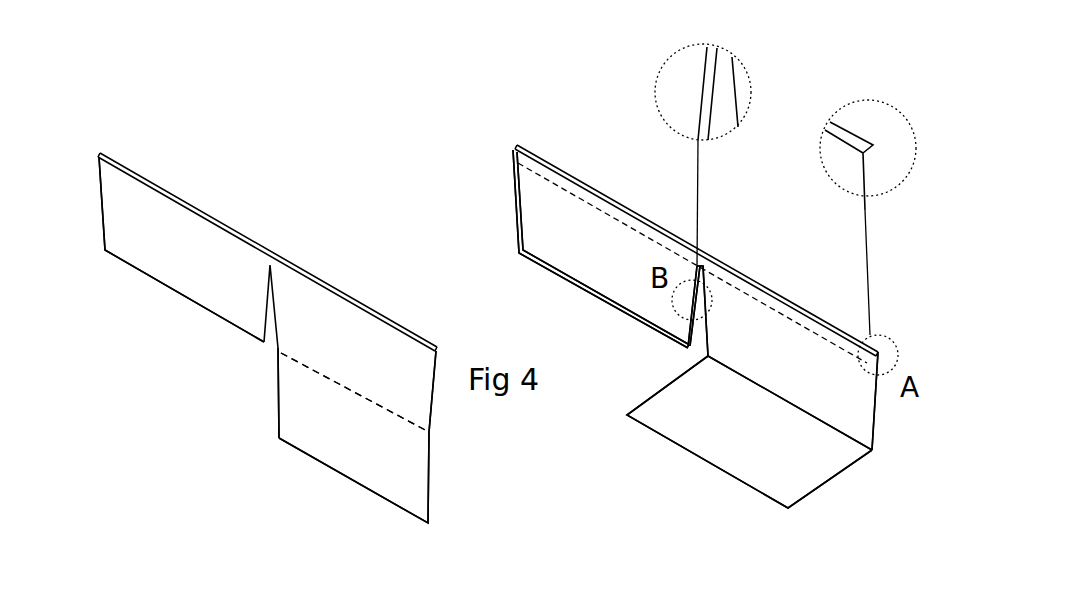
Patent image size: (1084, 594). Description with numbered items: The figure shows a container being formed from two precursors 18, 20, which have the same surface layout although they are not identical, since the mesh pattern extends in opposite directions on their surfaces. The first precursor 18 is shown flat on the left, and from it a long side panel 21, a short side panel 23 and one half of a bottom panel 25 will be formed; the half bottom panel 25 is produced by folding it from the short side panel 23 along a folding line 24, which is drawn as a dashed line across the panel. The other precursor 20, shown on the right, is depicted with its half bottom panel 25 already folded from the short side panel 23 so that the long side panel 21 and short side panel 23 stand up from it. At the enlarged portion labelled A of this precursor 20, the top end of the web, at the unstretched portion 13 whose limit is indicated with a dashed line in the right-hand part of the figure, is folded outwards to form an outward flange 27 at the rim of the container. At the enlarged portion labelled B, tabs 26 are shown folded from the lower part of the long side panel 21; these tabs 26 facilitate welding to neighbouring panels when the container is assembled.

The unstretched portion 13 is at (713, 268).
The precursor 18 is at (262, 200).
The precursor 20 is at (578, 149).
The long side panel 21 is at (133, 240).
The short side panel 23 is at (345, 335).
The folding line 24 is at (300, 360).
The bottom panel 25 is at (333, 447).
The tab 26 is at (707, 100).
The outward flange 27 is at (850, 130).